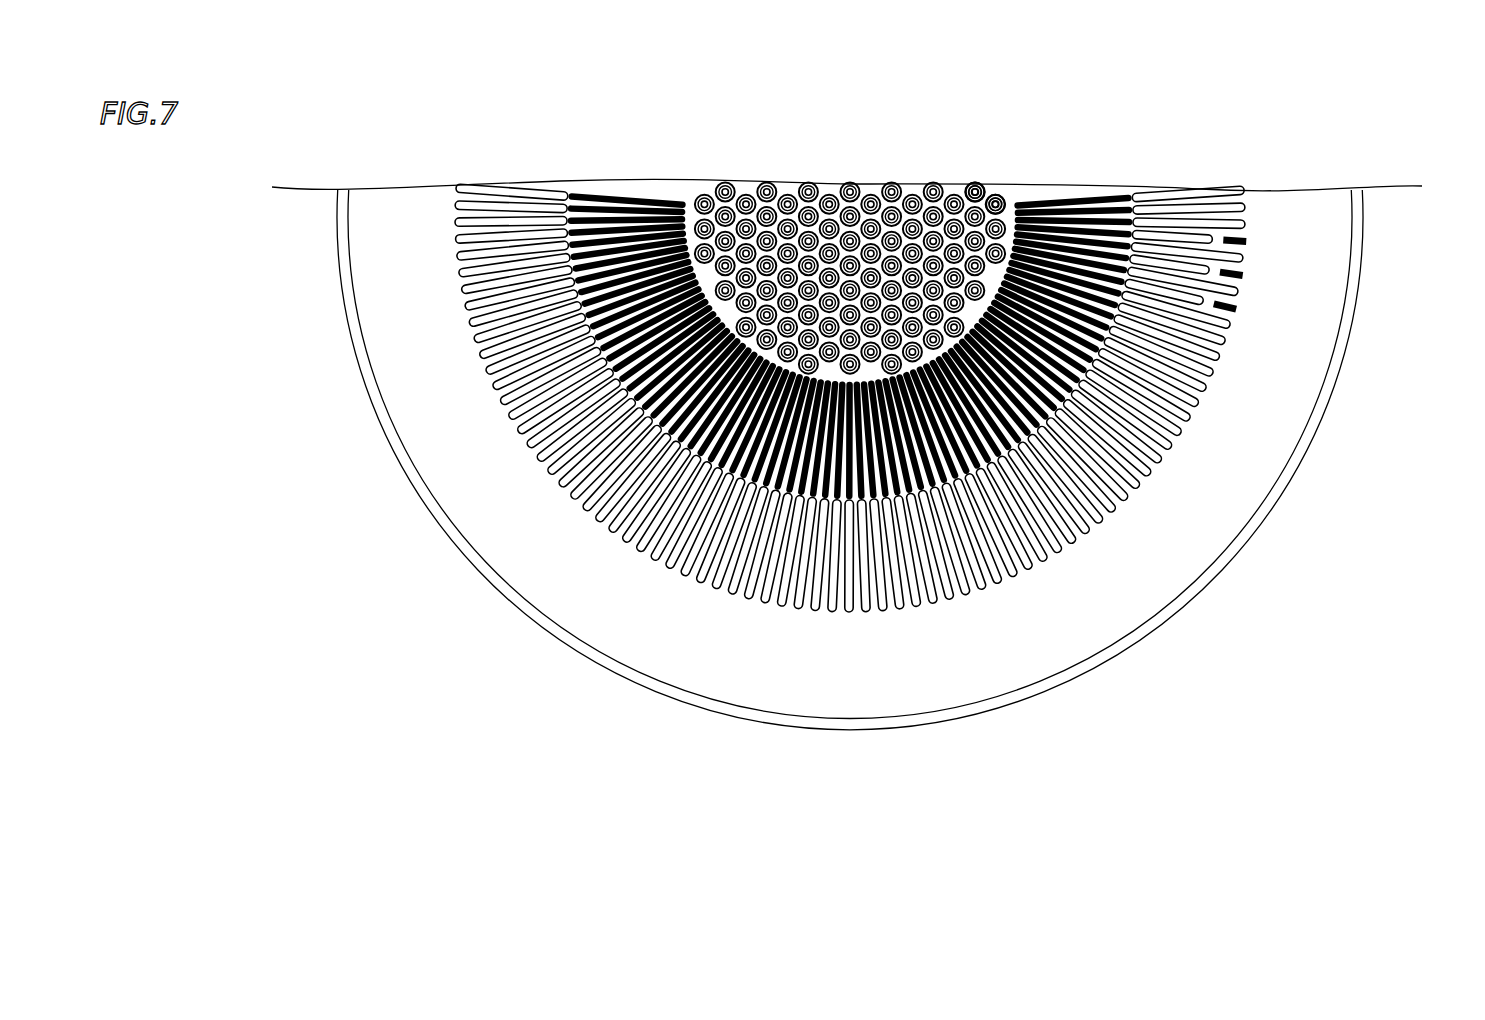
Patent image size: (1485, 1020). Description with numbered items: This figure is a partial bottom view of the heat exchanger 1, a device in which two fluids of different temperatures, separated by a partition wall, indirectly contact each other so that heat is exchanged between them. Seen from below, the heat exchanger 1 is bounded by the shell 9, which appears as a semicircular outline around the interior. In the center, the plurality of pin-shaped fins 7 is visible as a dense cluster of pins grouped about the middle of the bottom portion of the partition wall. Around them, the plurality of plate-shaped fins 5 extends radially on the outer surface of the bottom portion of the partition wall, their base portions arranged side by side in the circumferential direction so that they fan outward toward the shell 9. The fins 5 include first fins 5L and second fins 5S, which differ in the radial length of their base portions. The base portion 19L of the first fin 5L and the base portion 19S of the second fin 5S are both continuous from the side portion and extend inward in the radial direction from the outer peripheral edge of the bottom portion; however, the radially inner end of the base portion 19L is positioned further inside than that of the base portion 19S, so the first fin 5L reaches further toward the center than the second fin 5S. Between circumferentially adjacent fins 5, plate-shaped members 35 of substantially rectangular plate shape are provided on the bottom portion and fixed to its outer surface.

The heat exchanger 1 is at (868, 443).
The plate-shaped fins 5 is at (960, 446).
The first fin 5L is at (1195, 300).
The second fin 5S is at (1248, 247).
The pin-shaped fins 7 is at (856, 229).
The shell 9 is at (1040, 645).
The base portion of the first fin 19L is at (990, 190).
The base portion of the second fin 19S is at (1130, 225).
The plate-shaped members 35 is at (1160, 450).